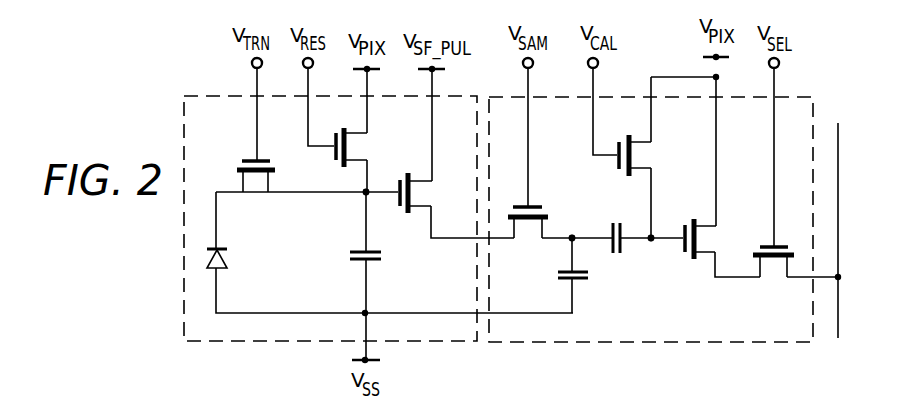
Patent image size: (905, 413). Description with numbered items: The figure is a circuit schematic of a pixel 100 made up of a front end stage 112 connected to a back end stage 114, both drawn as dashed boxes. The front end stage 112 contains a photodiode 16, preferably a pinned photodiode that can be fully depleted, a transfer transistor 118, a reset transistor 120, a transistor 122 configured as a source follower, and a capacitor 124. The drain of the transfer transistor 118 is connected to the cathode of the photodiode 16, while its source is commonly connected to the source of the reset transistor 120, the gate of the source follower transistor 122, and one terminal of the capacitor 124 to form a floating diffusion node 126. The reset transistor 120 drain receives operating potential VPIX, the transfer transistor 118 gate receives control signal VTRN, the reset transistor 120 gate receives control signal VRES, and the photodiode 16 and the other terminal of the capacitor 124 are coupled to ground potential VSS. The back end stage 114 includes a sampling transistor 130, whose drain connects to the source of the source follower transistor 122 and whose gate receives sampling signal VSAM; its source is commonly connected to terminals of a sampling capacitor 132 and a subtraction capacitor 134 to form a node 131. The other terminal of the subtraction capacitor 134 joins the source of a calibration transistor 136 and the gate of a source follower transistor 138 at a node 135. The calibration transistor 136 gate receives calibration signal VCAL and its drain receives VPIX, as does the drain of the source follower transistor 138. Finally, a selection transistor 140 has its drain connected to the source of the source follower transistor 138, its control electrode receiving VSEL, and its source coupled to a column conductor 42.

The pixel 100 is at (128, 243).
The front end stage 112 is at (212, 96).
The back end stage 114 is at (795, 97).
The photodiode 16 is at (228, 249).
The transfer transistor 118 is at (253, 188).
The reset transistor 120 is at (360, 148).
The source follower transistor 122 is at (420, 192).
The capacitor 124 is at (352, 250).
The floating diffusion node 126 is at (363, 196).
The sampling transistor 130 is at (527, 232).
The node 131 is at (573, 234).
The sampling capacitor 132 is at (590, 280).
The subtraction capacitor 134 is at (620, 223).
The node 135 is at (652, 242).
The calibration transistor 136 is at (647, 155).
The source follower transistor 138 is at (710, 238).
The selection transistor 140 is at (772, 267).
The column conductor 42 is at (840, 165).